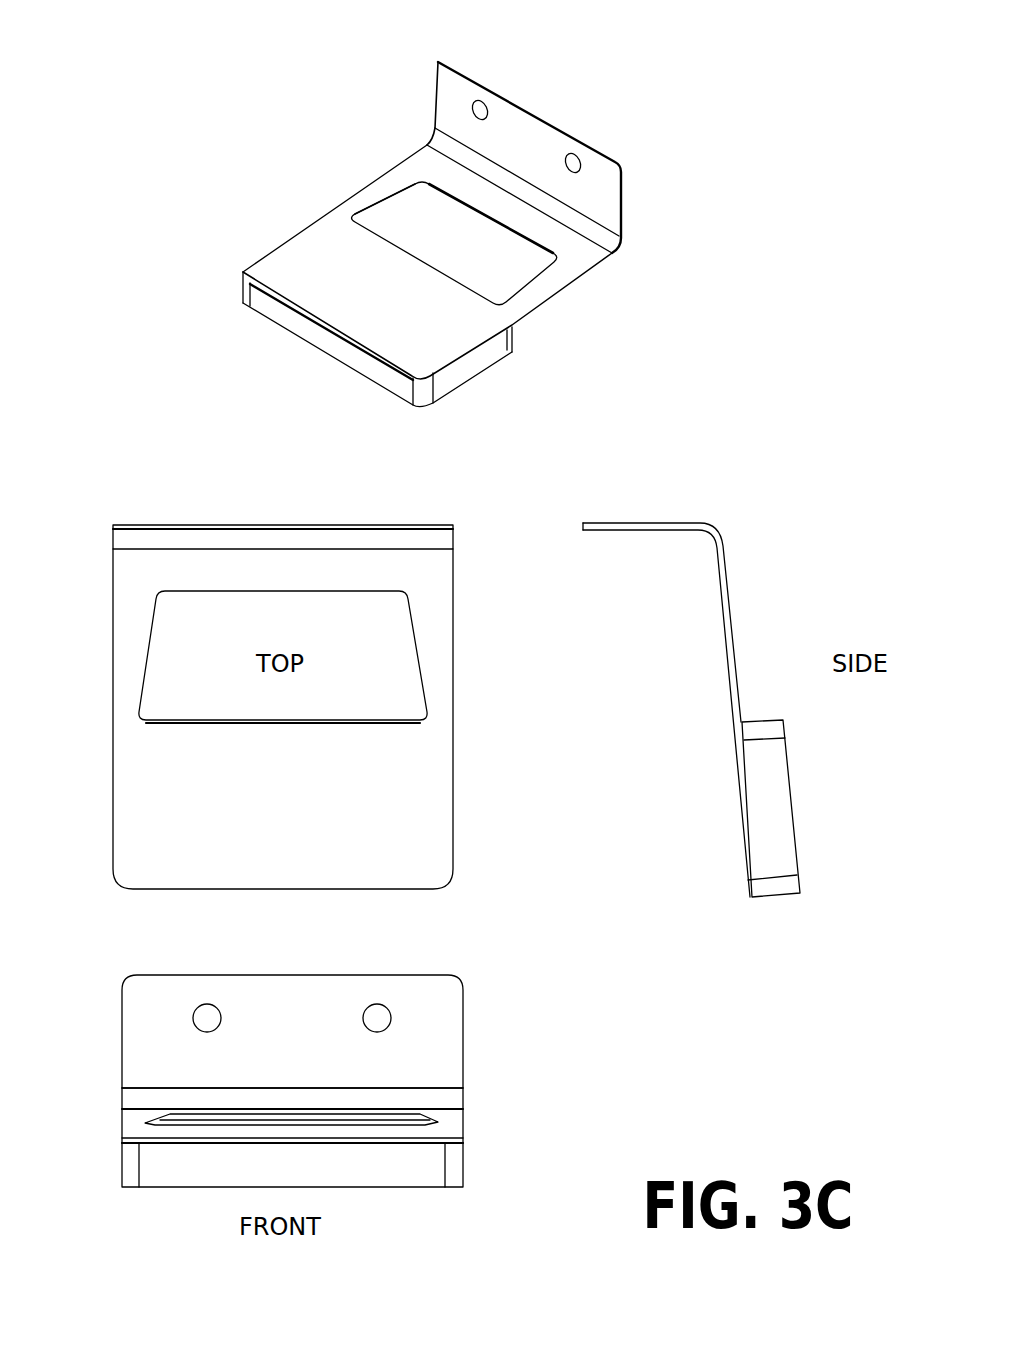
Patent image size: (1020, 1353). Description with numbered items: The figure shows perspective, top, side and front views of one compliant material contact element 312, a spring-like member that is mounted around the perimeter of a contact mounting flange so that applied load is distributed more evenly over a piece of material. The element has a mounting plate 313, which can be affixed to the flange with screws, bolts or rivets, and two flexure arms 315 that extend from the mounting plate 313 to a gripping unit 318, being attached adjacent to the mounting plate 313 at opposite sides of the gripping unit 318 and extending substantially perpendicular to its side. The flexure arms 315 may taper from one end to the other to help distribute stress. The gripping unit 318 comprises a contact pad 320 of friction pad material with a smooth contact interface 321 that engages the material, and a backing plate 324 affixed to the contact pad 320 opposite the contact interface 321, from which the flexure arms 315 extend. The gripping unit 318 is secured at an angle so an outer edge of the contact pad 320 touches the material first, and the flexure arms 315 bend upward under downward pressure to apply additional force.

The compliant material contact element 312 is at (560, 90).
The mounting plate 313 is at (438, 60).
The flexure arm 315 is at (373, 167).
The gripping unit 318 is at (332, 388).
The contact pad 320 is at (282, 318).
The contact interface 321 is at (410, 412).
The backing plate 324 is at (298, 252).